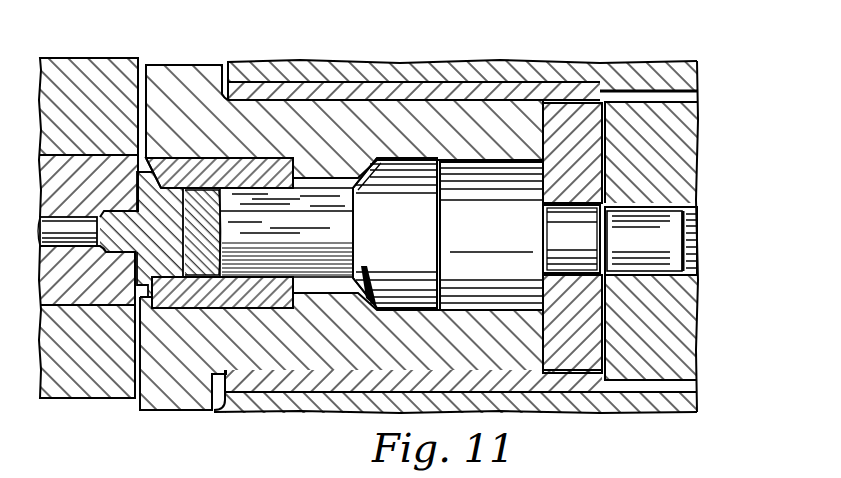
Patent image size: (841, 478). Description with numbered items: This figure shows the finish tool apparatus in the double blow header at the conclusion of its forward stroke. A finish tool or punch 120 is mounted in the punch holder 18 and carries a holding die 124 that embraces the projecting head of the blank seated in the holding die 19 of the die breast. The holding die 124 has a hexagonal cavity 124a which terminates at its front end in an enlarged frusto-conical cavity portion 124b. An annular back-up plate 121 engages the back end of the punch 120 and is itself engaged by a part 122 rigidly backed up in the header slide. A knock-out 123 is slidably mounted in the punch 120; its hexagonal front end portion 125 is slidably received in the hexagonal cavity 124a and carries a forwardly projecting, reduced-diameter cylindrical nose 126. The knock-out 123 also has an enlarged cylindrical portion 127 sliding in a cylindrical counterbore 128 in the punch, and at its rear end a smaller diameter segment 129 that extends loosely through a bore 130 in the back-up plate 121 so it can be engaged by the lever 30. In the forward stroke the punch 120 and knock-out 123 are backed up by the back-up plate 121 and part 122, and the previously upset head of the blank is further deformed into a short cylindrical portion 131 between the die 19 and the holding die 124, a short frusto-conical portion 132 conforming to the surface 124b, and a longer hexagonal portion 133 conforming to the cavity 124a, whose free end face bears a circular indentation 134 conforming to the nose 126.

The punch holder 18 is at (314, 70).
The holding die 19 is at (100, 286).
The lever 30 is at (684, 244).
The finish tool or punch 120 is at (190, 72).
The annular back-up plate 121 is at (586, 180).
The part 122 is at (678, 171).
The knock-out 123 is at (372, 266).
The holding die 124 is at (168, 187).
The hexagonal cavity 124a is at (246, 280).
The frusto-conical cavity portion 124b is at (150, 176).
The hexagonal front end portion 125 is at (322, 268).
The cylindrical nose 126 is at (191, 266).
The enlarged cylindrical portion 127 is at (500, 284).
The cylindrical counterbore 128 is at (409, 302).
The smaller diameter segment 129 is at (564, 222).
The bore 130 is at (577, 277).
The short cylindrical portion 131 is at (127, 324).
The short frusto-conical portion 132 is at (146, 288).
The hexagonal portion 133 is at (172, 183).
The circular indentation 134 is at (204, 197).